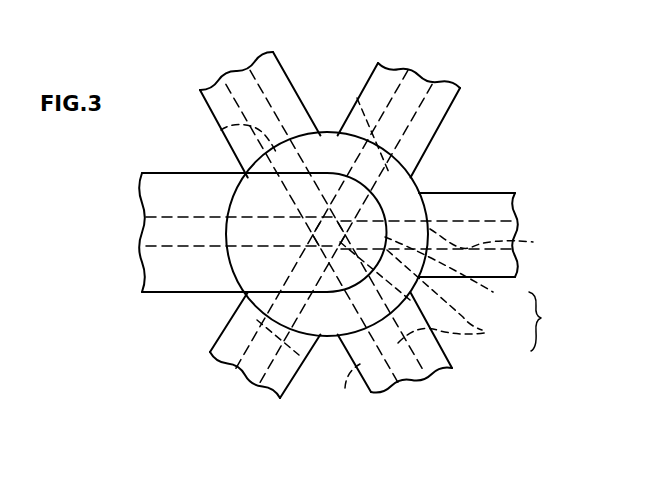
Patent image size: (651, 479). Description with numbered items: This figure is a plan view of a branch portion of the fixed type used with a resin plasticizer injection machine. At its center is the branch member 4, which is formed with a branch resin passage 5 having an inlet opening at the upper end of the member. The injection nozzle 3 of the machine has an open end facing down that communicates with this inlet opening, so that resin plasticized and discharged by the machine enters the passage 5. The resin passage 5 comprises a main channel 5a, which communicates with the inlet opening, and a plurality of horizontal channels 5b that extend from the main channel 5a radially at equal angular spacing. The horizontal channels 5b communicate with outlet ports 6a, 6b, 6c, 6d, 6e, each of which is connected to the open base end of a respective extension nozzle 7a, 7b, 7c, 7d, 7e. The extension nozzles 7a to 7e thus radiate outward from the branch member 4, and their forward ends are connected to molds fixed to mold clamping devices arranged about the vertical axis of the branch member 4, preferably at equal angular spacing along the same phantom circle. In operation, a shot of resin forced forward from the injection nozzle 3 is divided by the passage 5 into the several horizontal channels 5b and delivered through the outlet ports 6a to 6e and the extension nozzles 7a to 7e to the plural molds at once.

The injection nozzle 3 is at (182, 293).
The branch member 4 is at (417, 176).
The branch resin passage 5 is at (542, 321).
The main channel 5a is at (452, 275).
The horizontal channels 5b is at (431, 296).
The outlet port 6a is at (300, 358).
The outlet port 6b is at (345, 387).
The outlet port 6c is at (496, 243).
The outlet port 6d is at (356, 95).
The outlet port 6e is at (221, 130).
The extension nozzle 7a is at (284, 391).
The extension nozzle 7b is at (368, 393).
The extension nozzle 7c is at (495, 198).
The extension nozzle 7d is at (443, 101).
The extension nozzle 7e is at (273, 78).